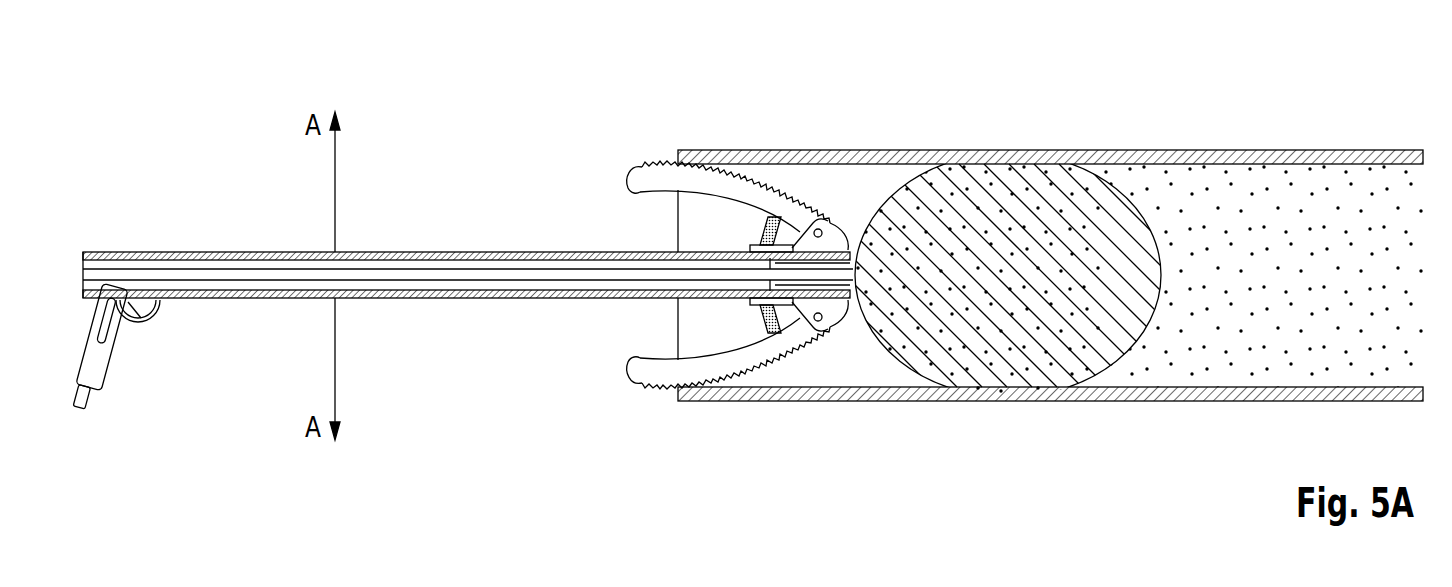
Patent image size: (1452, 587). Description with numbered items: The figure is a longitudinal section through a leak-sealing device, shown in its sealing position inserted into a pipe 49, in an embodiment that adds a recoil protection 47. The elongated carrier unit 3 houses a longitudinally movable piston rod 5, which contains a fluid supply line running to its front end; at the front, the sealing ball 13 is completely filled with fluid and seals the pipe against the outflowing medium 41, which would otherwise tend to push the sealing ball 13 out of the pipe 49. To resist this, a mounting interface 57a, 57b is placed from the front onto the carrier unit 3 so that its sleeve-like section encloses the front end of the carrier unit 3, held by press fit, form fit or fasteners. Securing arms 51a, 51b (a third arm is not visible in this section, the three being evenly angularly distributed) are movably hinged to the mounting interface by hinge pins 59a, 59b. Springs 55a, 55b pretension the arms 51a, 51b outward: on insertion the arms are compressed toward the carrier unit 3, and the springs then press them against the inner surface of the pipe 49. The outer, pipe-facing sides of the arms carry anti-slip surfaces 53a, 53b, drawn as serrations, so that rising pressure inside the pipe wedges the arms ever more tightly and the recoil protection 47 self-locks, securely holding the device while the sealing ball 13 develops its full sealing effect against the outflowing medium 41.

The carrier unit 3 is at (372, 252).
The piston rod 5 is at (415, 278).
The sealing ball 13 is at (995, 188).
The outflowing medium 41 is at (1264, 182).
The recoil protection 47 is at (1042, 260).
The pipe 49 is at (1113, 155).
The securing arm 51a is at (638, 165).
The securing arm 51b is at (653, 382).
The anti-slip surface 53a is at (755, 160).
The anti-slip surface 53b is at (776, 390).
The spring 55a is at (767, 222).
The spring 55b is at (757, 330).
The mounting interface 57a is at (790, 208).
The mounting interface 57b is at (757, 300).
The hinge pin 59a is at (827, 223).
The hinge pin 59b is at (830, 326).